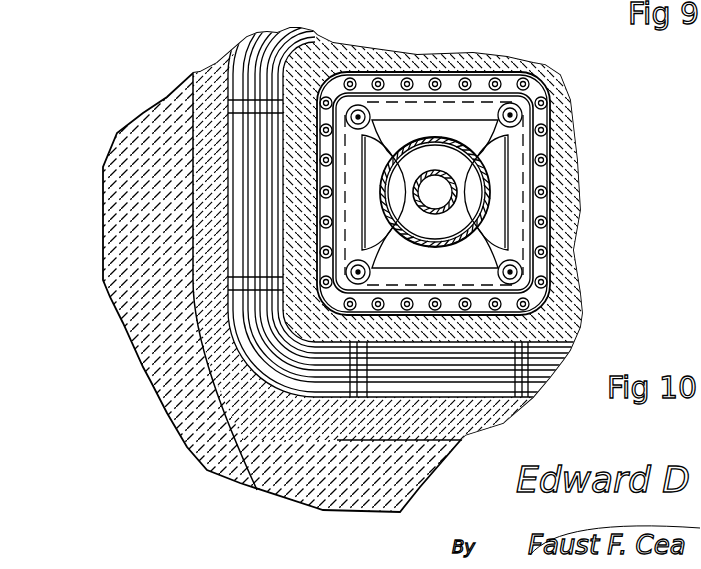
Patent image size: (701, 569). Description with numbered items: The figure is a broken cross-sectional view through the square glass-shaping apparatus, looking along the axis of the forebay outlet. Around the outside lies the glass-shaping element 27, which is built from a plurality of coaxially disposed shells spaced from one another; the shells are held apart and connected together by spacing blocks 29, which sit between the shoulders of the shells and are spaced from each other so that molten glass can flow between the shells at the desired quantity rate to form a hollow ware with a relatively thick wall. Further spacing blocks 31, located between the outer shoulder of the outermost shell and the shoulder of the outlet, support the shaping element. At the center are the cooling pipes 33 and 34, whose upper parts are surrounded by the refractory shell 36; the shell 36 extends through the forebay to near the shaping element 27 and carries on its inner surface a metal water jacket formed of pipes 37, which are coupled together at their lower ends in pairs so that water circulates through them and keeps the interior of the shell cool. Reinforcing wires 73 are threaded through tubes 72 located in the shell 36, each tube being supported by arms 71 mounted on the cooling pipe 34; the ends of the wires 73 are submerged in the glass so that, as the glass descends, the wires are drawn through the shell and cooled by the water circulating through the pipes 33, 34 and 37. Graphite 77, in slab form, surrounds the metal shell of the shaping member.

The glass-shaping element 27 is at (563, 360).
The spacing blocks 29 is at (253, 100).
The spacing blocks 31 is at (233, 102).
The pipe 33 is at (453, 182).
The pipe 34 is at (490, 193).
The refractory shell 36 is at (303, 297).
The pipes 37 is at (537, 297).
The arms 71 is at (375, 130).
The tubes 72 is at (520, 112).
The wires 73 is at (360, 110).
The graphite 77 is at (492, 222).